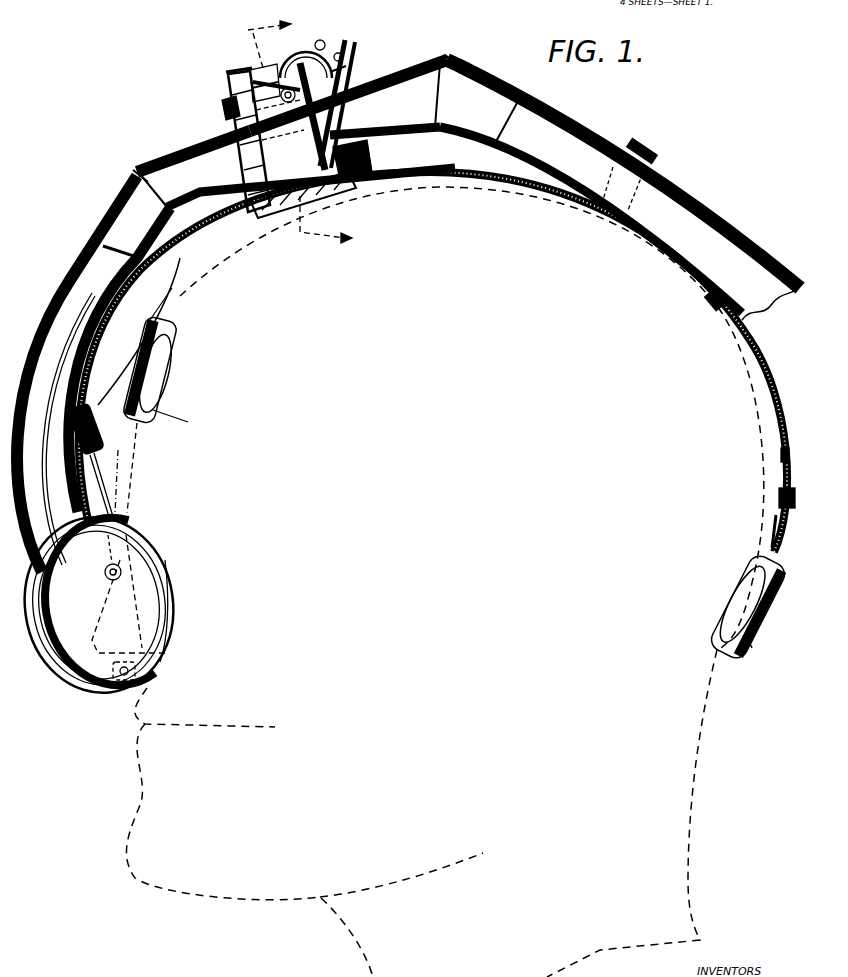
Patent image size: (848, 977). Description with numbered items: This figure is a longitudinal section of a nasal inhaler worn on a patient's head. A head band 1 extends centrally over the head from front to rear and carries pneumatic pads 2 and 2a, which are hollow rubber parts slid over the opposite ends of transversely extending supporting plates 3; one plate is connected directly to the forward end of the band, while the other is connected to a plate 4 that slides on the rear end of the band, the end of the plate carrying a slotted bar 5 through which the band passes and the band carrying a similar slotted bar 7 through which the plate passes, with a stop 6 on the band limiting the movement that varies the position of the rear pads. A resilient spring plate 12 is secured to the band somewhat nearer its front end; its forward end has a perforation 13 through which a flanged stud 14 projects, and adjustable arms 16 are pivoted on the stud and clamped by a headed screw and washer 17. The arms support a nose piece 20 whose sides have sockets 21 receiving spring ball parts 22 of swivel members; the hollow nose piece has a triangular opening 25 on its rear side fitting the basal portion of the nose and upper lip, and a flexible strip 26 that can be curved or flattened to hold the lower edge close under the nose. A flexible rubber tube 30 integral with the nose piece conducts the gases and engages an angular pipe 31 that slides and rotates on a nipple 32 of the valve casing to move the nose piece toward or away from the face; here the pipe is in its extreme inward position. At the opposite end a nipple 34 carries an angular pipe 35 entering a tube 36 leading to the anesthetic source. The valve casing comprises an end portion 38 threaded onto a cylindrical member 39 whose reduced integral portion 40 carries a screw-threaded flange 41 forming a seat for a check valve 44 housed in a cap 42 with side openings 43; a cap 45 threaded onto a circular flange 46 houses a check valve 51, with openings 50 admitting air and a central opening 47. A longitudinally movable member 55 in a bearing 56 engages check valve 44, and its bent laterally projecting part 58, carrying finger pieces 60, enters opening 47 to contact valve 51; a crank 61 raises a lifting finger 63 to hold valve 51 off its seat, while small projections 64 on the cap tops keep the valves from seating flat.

The head band 1 is at (433, 183).
The pneumatic pad 2 is at (168, 360).
The rear pneumatic pad 2a is at (729, 592).
The transverse supporting plate 3 is at (459, 343).
The plate 4 is at (774, 531).
The slotted bar 5 is at (708, 308).
The stop 6 is at (786, 444).
The slotted bar 7 is at (779, 498).
The resilient spring plate 12 is at (197, 252).
The perforation 13 is at (100, 394).
The flanged stud 14 is at (120, 438).
The adjustable arms 16 is at (105, 485).
The headed screw and washer 17 is at (125, 456).
The nose piece 20 is at (48, 668).
The socket 21 is at (115, 582).
The spring ball part 22 is at (120, 552).
The triangular opening 25 is at (165, 573).
The flexible strip 26 is at (123, 694).
The flexible rubber tube 30 is at (67, 275).
The angular pipe 31 is at (138, 168).
The nipple 32 is at (182, 152).
The nipple 34 is at (390, 74).
The angular pipe 35 is at (445, 56).
The tube 36 is at (600, 126).
The end portion 38 is at (226, 106).
The cylindrical member 39 is at (320, 198).
The reduced integral portion 40 is at (366, 166).
The screw-threaded flange 41 is at (330, 141).
The cap 42 is at (283, 186).
The openings 43 is at (284, 140).
The check valve 44 is at (380, 118).
The cap 45 is at (250, 70).
The circular flange 46 is at (246, 88).
The central opening 47 is at (243, 78).
The openings 50 is at (268, 65).
The check valve 51 is at (320, 40).
The longitudinally movable member 55 is at (347, 68).
The bearing 56 is at (344, 56).
The bent laterally projecting part 58 is at (350, 40).
The finger pieces 60 is at (360, 44).
The crank 61 is at (232, 206).
The lifting finger 63 is at (240, 152).
The small projections 64 is at (226, 74).